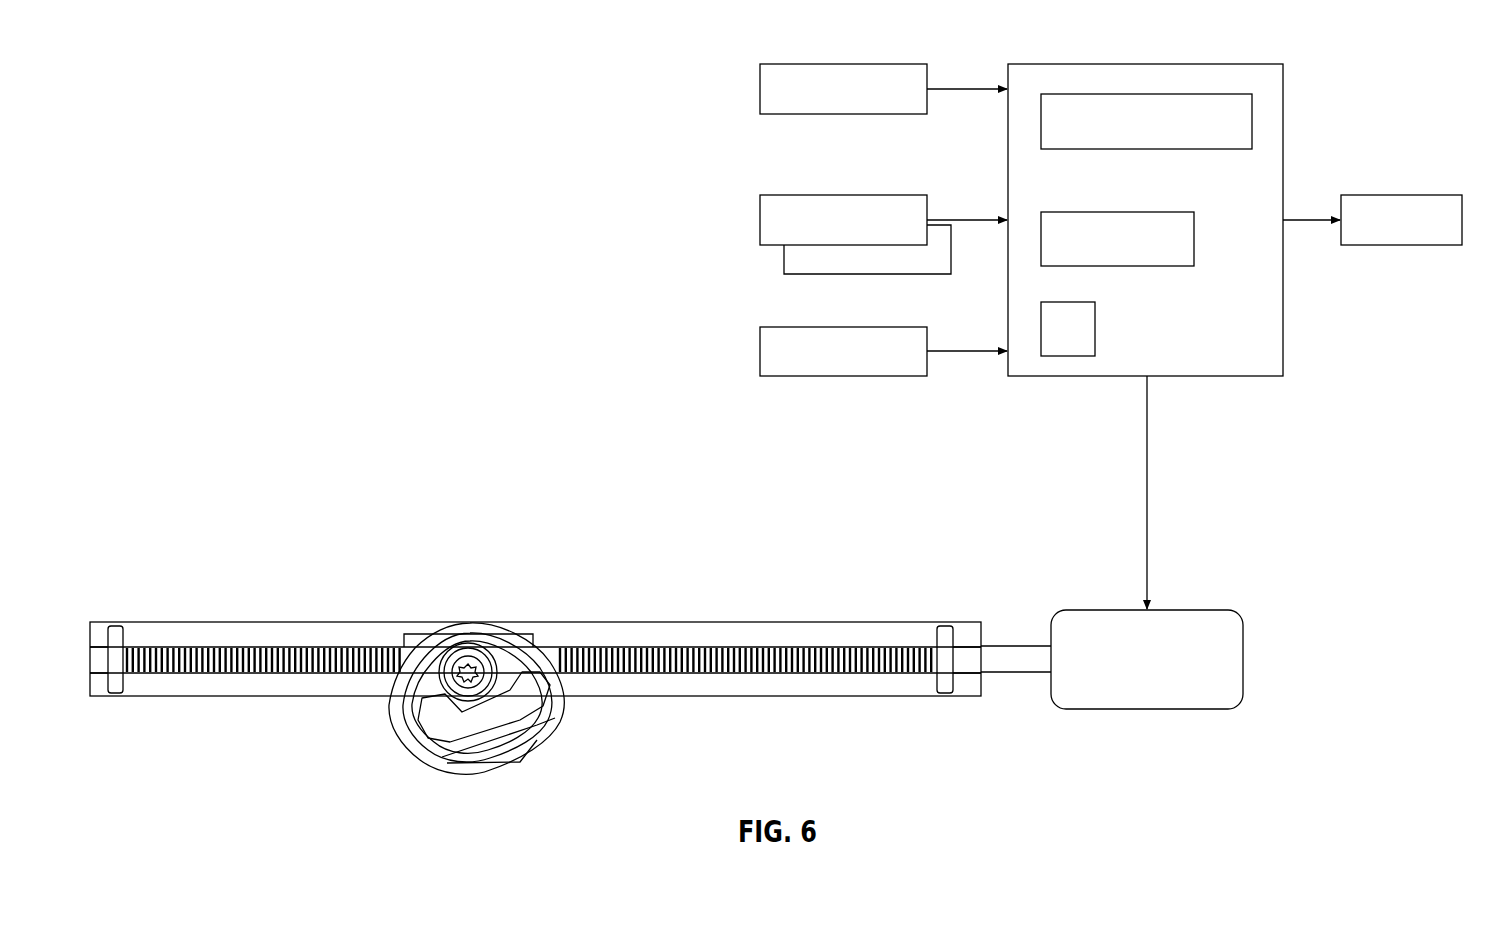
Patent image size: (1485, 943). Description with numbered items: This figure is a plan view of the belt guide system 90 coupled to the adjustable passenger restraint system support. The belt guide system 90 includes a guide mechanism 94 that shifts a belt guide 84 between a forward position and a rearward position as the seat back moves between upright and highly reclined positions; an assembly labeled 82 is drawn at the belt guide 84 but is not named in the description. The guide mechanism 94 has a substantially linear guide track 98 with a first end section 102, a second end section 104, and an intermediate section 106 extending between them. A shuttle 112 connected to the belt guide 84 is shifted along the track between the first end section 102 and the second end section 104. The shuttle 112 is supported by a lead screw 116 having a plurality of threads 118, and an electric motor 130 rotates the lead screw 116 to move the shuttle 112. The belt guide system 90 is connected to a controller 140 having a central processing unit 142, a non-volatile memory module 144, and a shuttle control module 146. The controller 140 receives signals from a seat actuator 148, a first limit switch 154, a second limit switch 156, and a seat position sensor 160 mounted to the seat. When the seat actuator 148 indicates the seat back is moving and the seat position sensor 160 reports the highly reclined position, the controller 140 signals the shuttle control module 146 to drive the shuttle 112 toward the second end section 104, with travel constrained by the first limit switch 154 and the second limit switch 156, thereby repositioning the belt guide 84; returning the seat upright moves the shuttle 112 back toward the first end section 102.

The latch assembly 82 is at (456, 698).
The belt guide 84 is at (555, 715).
The belt guide system 90 is at (570, 687).
The guide mechanism 94 is at (700, 701).
The guide track 98 is at (745, 655).
The first end section 102 is at (153, 672).
The second end section 104 is at (930, 675).
The intermediate section 106 is at (615, 655).
The shuttle 112 is at (418, 643).
The lead screw 116 is at (282, 655).
The threads 118 is at (355, 655).
The electric motor 130 is at (1370, 195).
The controller 140 is at (1319, 97).
The central processing unit 142 is at (1215, 150).
The non-volatile memory module 144 is at (1075, 212).
The shuttle control module 146 is at (1075, 302).
The seat actuator 148 is at (790, 64).
The first limit switch 154 is at (790, 195).
The second limit switch 156 is at (918, 274).
The seat position sensor 160 is at (790, 327).